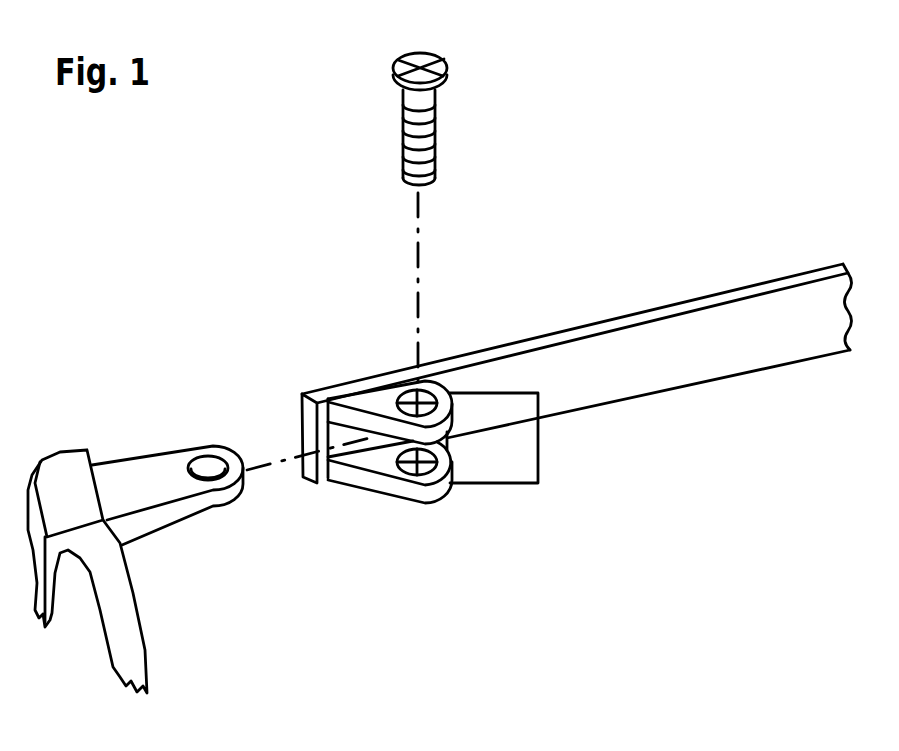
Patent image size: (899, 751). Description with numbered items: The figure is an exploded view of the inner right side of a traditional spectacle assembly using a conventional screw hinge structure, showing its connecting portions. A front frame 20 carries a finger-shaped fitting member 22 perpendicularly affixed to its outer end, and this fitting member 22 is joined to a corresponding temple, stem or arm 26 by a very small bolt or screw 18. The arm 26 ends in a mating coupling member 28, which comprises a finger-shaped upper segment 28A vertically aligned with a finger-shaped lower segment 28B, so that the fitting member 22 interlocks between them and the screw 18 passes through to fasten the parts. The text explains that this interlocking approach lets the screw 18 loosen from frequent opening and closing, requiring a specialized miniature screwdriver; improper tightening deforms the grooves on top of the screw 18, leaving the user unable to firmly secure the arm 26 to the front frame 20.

The screw 18 is at (413, 98).
The front frame 20 is at (120, 632).
The fitting member 22 is at (167, 463).
The arm 26 is at (747, 353).
The coupling member 28 is at (538, 442).
The upper segment 28A is at (435, 377).
The lower segment 28B is at (435, 483).